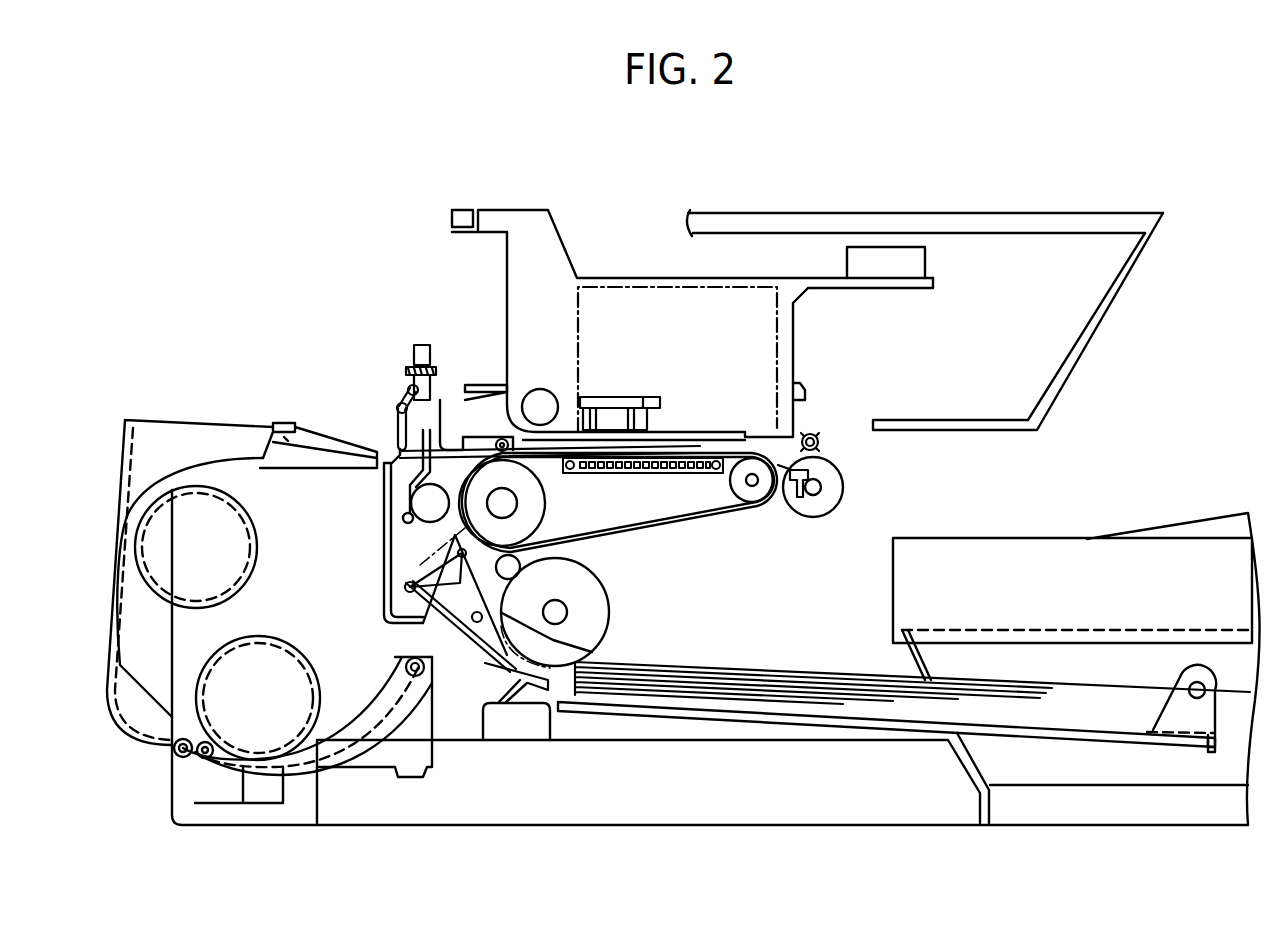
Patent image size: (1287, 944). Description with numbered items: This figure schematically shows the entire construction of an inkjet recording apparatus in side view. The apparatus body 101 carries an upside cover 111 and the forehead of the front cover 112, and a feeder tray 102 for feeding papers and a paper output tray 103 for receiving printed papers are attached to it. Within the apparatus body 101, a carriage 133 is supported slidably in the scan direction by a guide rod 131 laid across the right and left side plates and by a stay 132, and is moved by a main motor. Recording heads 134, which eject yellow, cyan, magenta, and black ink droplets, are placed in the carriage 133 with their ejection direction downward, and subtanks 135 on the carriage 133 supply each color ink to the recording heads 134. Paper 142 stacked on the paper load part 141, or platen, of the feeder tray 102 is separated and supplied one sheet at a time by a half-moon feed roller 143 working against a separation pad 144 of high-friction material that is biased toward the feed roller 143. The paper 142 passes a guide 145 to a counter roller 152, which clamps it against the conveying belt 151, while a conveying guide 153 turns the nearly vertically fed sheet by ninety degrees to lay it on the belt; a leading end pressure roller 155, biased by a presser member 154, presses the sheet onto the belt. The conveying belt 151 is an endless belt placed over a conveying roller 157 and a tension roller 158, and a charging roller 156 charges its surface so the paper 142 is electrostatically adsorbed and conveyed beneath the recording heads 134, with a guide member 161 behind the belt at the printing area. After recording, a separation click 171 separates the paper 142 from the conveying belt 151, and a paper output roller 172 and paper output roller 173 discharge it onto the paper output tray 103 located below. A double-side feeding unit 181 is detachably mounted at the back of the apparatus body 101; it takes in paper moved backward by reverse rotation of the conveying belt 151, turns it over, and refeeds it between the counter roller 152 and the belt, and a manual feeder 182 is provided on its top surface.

The apparatus body 101 is at (925, 271).
The feeder tray 102 is at (1075, 804).
The paper output tray 103 is at (1156, 525).
The upside cover 111 is at (990, 216).
The forehead of the front cover 112 is at (1098, 328).
The guide rod 131 is at (536, 392).
The stay 132 is at (462, 215).
The carriage 133 is at (557, 247).
The recording heads 134 is at (700, 430).
The subtanks 135 is at (737, 303).
The paper load part 141 is at (657, 712).
The paper 142 is at (748, 697).
The feed roller 143 is at (604, 617).
The separation pad 144 is at (515, 705).
The guide 145 is at (470, 623).
The conveying belt 151 is at (670, 527).
The counter roller 152 is at (420, 502).
The conveying guide 153 is at (395, 449).
The presser member 154 is at (428, 420).
The leading end pressure roller 155 is at (498, 438).
The charging roller 156 is at (520, 566).
The conveying roller 157 is at (542, 502).
The tension roller 158 is at (755, 496).
The guide member 161 is at (628, 474).
The separation click 171 is at (812, 514).
The paper output roller 172 is at (840, 487).
The paper output roller 173 is at (822, 442).
The double-side feeding unit 181 is at (133, 472).
The manual feeder 182 is at (276, 421).